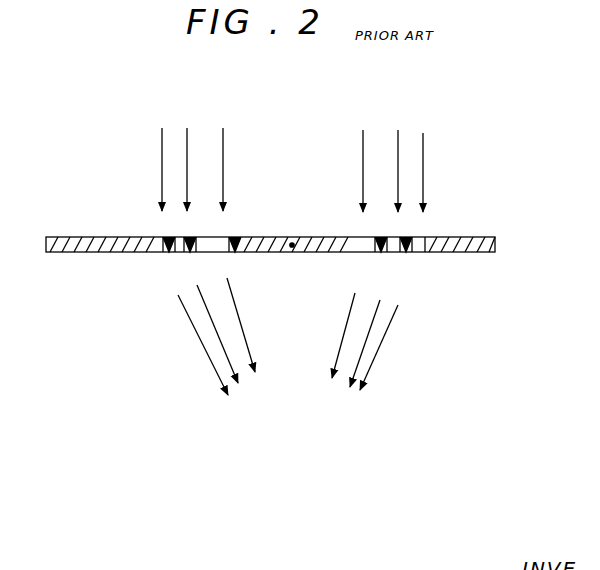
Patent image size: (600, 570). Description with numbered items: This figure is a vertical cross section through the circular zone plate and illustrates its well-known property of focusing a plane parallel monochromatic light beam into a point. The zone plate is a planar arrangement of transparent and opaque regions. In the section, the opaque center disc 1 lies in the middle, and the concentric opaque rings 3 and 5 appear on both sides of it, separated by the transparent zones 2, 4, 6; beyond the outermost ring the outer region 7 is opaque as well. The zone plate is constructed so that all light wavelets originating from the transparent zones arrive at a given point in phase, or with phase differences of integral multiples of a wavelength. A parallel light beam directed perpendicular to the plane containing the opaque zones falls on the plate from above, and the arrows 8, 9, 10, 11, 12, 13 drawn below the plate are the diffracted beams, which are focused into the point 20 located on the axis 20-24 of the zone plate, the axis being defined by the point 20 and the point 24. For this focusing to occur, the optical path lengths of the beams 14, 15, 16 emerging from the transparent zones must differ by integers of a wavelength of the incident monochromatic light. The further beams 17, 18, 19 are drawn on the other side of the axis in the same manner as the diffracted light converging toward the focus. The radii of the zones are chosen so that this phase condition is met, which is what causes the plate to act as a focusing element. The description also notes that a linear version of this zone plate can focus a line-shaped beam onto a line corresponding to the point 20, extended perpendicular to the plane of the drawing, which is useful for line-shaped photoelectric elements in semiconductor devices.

The center disc 1 is at (265, 253).
The transparent zone 2 is at (226, 237).
The opaque ring 3 is at (376, 253).
The transparent zone 4 is at (191, 237).
The opaque ring 5 is at (410, 253).
The transparent zone 6 is at (165, 237).
The outer region 7 is at (462, 253).
The diffracted beam 8 is at (161, 153).
The diffracted beam 9 is at (185, 153).
The diffracted beam 10 is at (221, 153).
The diffracted beam 11 is at (360, 153).
The diffracted beam 12 is at (396, 153).
The diffracted beam 13 is at (428, 153).
The beam 14 is at (208, 356).
The beam 15 is at (227, 345).
The beam 16 is at (251, 333).
The transmitted beam 17 is at (330, 342).
The transmitted beam 18 is at (354, 355).
The transmitted beam 19 is at (374, 359).
The focal point 20 is at (292, 520).
The axis point 24 is at (300, 237).